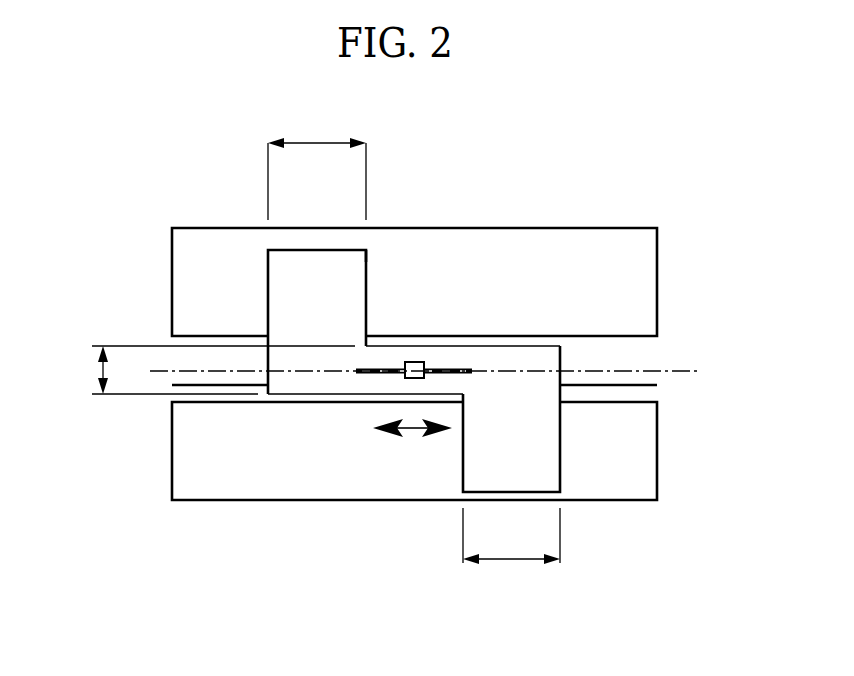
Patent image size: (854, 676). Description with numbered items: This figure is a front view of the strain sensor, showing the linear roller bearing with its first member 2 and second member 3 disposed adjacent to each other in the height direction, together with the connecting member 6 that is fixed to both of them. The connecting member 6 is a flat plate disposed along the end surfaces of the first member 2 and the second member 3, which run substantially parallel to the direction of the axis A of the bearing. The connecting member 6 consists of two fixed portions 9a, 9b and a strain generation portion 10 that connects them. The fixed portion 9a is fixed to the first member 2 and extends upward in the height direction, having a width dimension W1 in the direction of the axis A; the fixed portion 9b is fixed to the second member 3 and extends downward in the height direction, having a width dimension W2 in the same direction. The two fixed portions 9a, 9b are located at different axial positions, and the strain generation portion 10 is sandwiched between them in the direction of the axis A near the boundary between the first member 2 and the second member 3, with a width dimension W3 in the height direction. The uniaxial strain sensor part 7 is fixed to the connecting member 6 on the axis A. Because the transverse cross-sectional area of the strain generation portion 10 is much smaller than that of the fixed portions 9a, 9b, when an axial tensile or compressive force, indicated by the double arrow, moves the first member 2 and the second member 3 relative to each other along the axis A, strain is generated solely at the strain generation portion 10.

The first member 2 is at (172, 454).
The second member 3 is at (172, 276).
The connecting member 6 is at (382, 244).
The uniaxial strain sensor part 7 is at (410, 362).
The fixed portion 9a is at (560, 458).
The fixed portion 9b is at (268, 270).
The strain generation portion 10 is at (387, 386).
The width dimension of fixed portion 9a W1 is at (511, 549).
The width dimension of fixed portion 9b W2 is at (317, 165).
The width dimension of strain generation portion W3 is at (117, 370).
The axis A is at (433, 372).